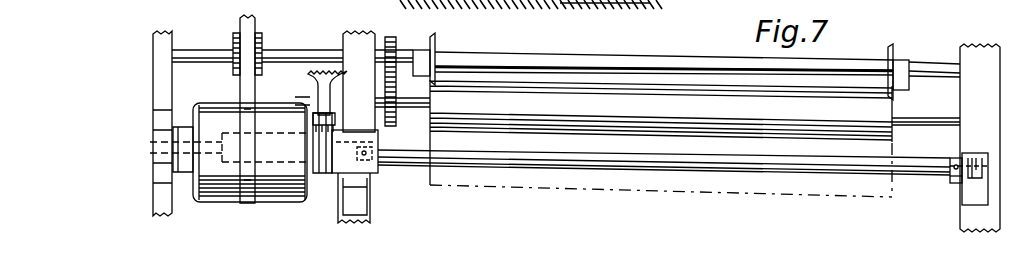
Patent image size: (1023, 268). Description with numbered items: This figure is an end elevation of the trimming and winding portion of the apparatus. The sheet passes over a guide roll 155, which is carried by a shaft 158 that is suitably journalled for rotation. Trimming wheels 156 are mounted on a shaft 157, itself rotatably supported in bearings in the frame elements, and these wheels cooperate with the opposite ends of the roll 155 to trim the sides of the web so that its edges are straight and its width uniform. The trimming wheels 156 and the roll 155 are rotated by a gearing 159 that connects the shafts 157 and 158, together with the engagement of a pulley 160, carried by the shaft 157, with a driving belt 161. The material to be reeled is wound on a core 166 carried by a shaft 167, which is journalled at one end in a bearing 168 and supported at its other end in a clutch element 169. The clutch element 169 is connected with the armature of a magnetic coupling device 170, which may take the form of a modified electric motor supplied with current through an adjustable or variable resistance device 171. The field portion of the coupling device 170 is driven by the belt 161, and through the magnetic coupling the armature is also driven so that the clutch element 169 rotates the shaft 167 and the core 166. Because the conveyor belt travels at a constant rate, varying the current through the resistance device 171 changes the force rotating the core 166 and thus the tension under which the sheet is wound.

The guide roll 155 is at (513, 92).
The trimming wheels 156 is at (434, 46).
The shaft 157 is at (603, 64).
The shaft 158 is at (924, 118).
The gearing 159 is at (402, 34).
The pulley 160 is at (235, 35).
The driving belt 161 is at (240, 89).
The core 166 is at (845, 198).
The shaft 167 is at (899, 172).
The bearing 168 is at (952, 160).
The clutch element 169 is at (380, 173).
The magnetic coupling device 170 is at (190, 185).
The adjustable or variable resistance device 171 is at (328, 70).